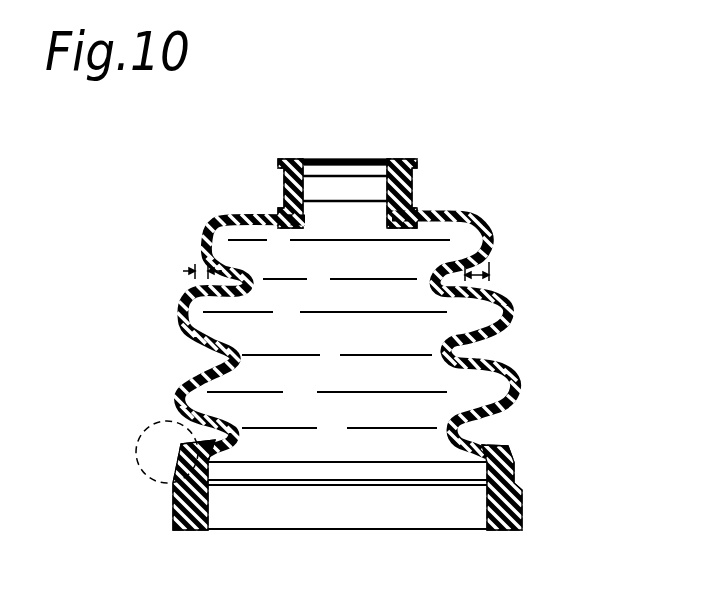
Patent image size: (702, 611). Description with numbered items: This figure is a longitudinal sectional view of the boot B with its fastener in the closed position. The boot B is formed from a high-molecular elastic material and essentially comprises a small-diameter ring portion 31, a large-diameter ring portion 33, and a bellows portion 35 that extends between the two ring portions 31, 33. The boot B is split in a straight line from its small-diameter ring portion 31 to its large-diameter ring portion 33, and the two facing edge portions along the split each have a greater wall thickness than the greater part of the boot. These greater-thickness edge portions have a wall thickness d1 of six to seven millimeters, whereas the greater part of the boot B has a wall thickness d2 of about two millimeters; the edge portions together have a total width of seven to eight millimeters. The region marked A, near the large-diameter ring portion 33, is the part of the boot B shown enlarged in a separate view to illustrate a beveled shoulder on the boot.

The small-diameter ring portion 31 is at (413, 178).
The large-diameter ring portion 33 is at (520, 493).
The bellows portion 35 is at (572, 208).
The wall thickness of greater-thickness portions d1 is at (489, 264).
The wall thickness of greater part of boot d2 is at (197, 264).
The part A is at (152, 432).
The boot B is at (193, 337).